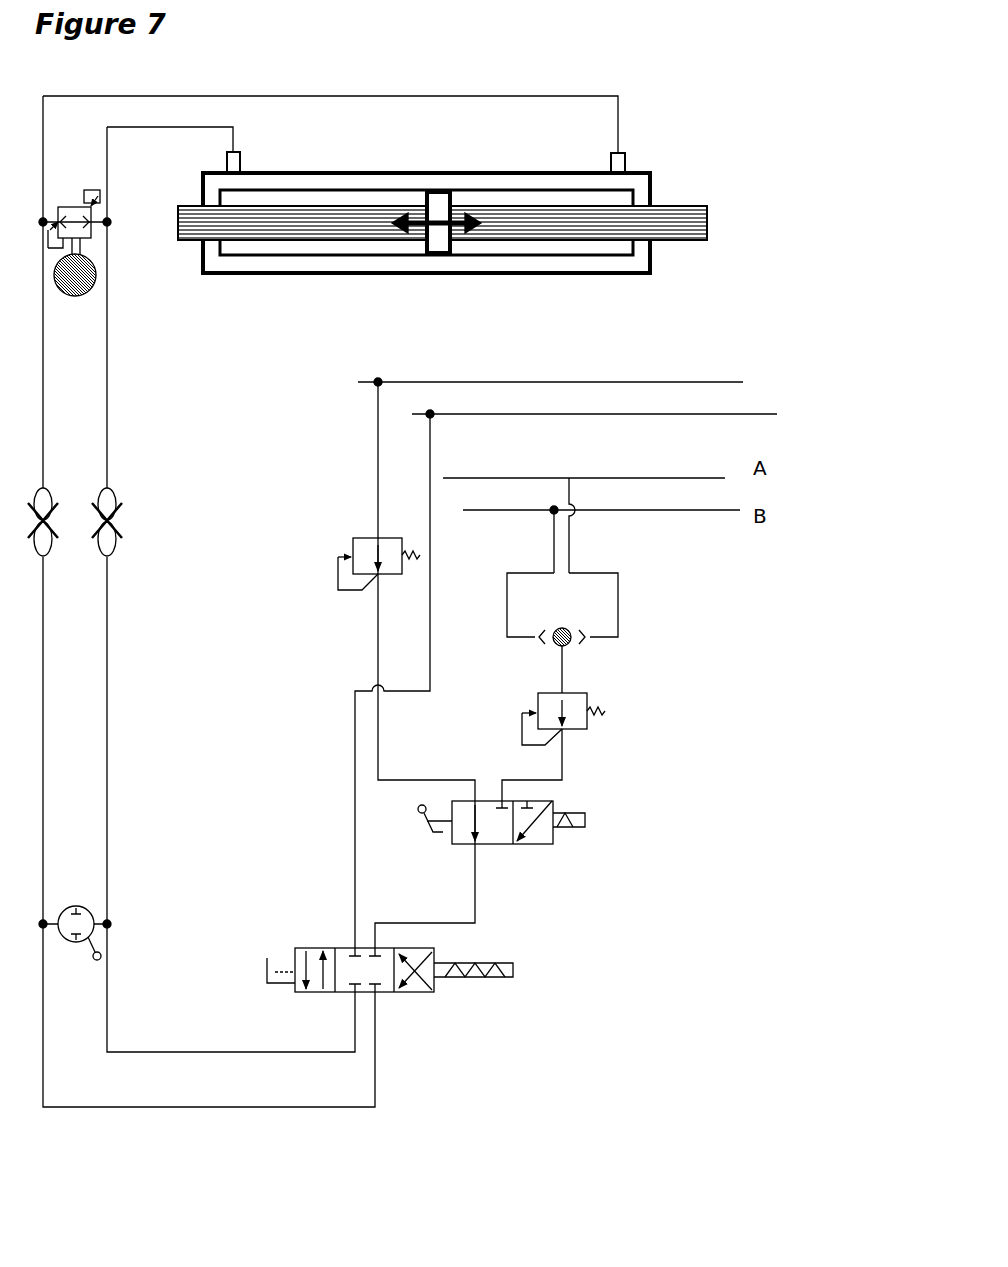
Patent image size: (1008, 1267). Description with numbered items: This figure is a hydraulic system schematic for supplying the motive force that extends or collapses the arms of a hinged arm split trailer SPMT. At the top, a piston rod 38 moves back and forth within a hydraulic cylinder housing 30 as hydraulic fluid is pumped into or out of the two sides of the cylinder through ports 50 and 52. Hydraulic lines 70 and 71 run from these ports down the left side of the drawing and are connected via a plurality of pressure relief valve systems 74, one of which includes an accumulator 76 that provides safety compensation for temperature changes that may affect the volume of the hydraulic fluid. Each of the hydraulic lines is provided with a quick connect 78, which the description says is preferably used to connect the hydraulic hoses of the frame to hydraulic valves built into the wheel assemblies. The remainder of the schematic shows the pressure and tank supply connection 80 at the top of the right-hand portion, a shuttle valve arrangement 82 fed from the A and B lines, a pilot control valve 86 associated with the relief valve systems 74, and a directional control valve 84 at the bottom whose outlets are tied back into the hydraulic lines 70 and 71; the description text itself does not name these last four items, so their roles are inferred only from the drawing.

The hydraulic cylinder housing 30 is at (398, 172).
The piston rod 38 is at (513, 208).
The port 50 is at (241, 161).
The port 52 is at (626, 161).
The hydraulic line 70 is at (333, 96).
The hydraulic line 71 is at (108, 169).
The pressure relief valve system 74 is at (321, 579).
The accumulator 76 is at (92, 290).
The quick connect 78 is at (107, 488).
The pressure and tank supply lines 80 is at (383, 376).
The shuttle valve 82 is at (644, 599).
The directional control valve 84 is at (471, 1002).
The pilot control valve 86 is at (566, 847).